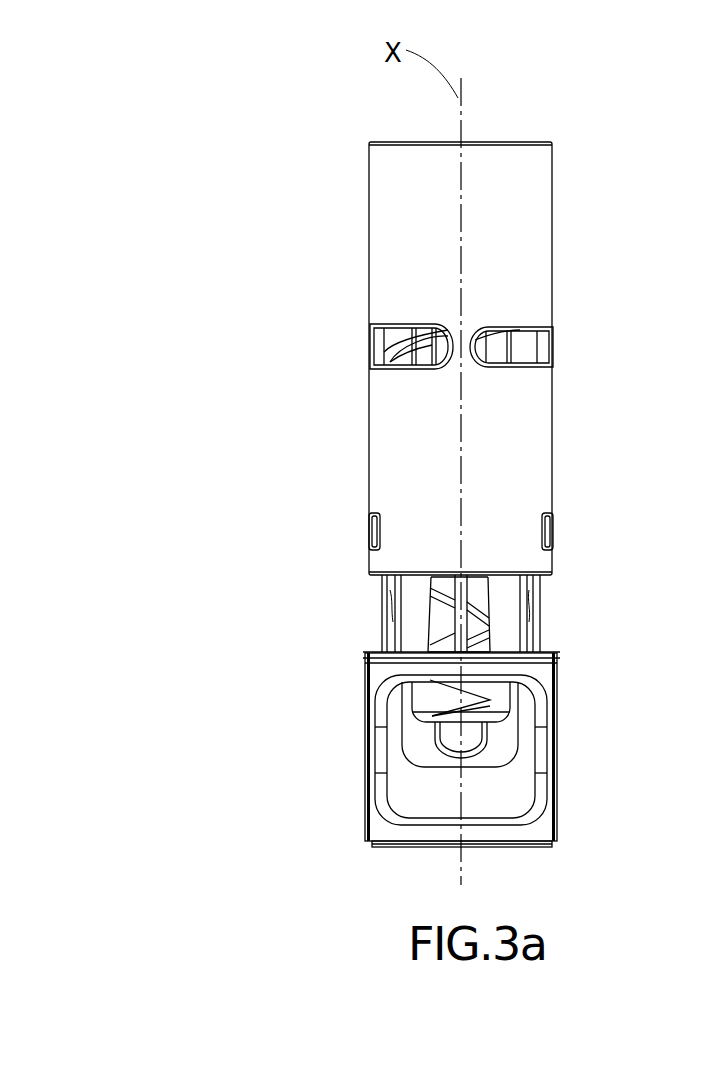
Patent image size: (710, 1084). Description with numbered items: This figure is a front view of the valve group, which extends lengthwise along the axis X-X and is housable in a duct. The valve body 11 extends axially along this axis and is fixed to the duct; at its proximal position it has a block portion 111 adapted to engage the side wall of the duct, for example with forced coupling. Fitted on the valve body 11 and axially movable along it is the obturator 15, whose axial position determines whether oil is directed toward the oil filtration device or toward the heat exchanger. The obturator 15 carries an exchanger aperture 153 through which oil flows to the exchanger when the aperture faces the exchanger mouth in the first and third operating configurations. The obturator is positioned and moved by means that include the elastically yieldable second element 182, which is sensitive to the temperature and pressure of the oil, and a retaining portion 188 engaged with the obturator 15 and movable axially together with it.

The obturator 15 is at (276, 448).
The exchanger aperture 153 is at (524, 345).
The second element 182 is at (480, 611).
The block portion 111 is at (342, 755).
The retaining portion 188 is at (500, 750).
The valve body 11 is at (530, 848).